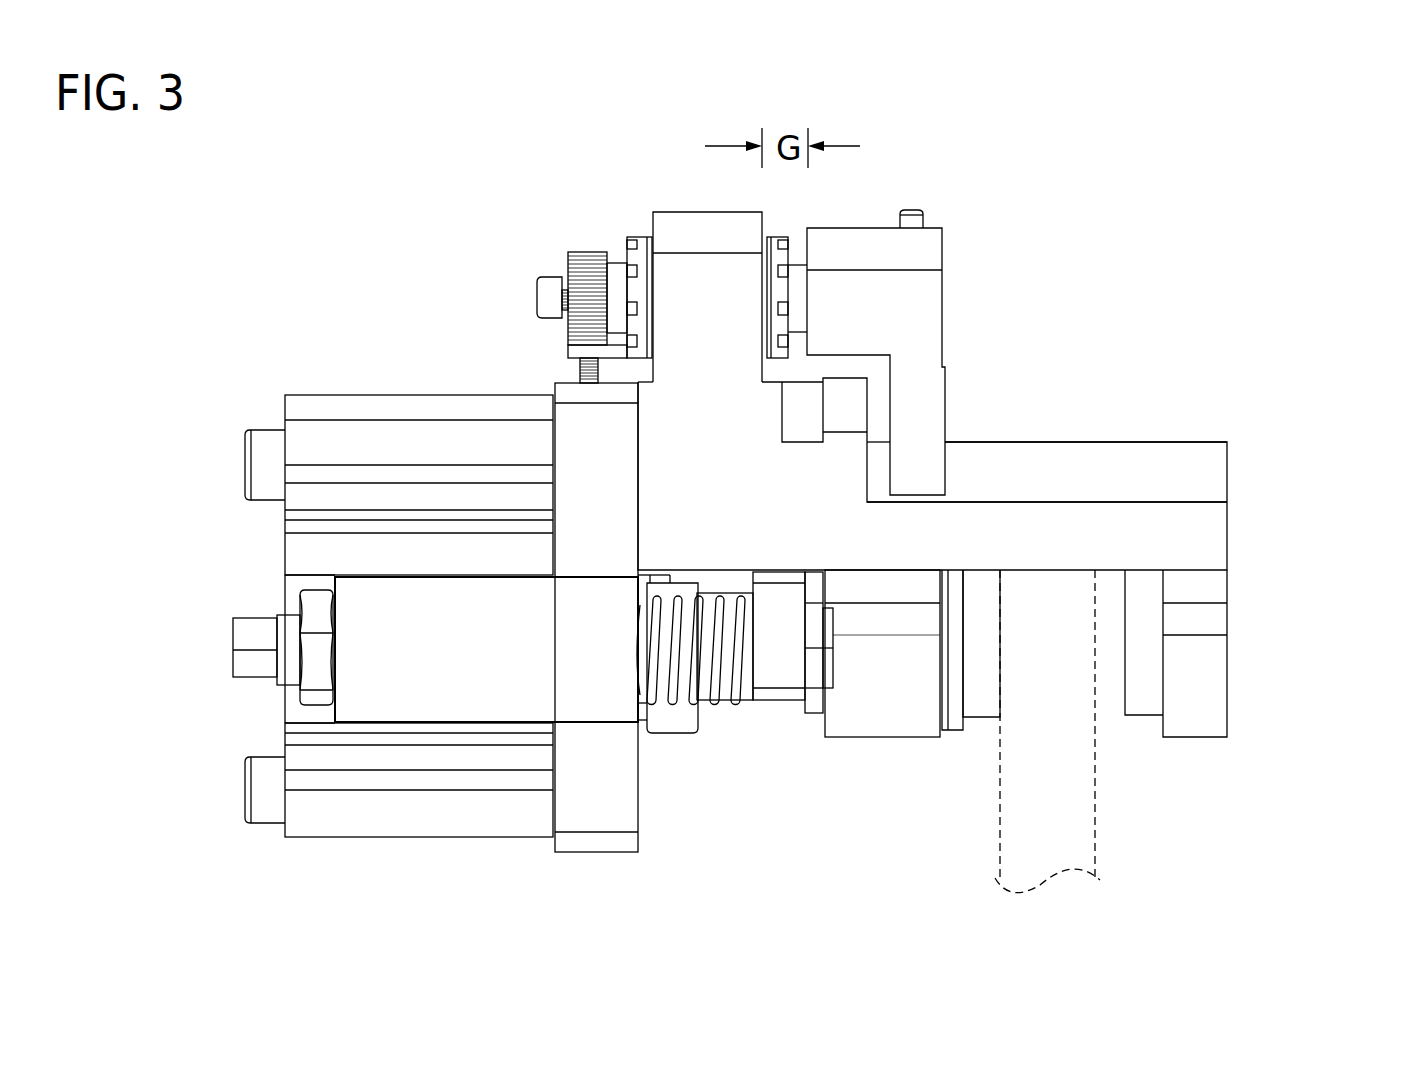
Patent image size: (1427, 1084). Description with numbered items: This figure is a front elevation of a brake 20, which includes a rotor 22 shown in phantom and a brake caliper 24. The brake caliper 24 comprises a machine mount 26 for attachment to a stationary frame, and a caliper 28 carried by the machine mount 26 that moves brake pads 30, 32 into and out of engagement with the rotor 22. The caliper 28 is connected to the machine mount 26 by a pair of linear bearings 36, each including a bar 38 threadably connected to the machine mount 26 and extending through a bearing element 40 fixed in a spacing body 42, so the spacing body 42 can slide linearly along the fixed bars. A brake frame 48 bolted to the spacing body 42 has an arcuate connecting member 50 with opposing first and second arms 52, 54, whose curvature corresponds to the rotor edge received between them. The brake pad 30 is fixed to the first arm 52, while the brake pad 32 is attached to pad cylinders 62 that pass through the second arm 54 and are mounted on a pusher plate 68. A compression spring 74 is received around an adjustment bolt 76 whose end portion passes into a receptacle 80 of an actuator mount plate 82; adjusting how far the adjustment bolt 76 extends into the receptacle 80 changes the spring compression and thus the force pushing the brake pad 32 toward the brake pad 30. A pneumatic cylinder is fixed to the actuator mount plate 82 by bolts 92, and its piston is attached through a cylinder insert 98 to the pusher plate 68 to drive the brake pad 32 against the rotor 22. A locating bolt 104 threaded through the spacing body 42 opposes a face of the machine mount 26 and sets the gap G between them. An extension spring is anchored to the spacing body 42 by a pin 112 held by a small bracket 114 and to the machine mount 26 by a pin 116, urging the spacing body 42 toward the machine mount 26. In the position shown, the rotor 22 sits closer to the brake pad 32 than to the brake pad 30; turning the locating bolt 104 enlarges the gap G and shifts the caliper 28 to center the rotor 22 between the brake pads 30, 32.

The brake 20 is at (1368, 176).
The rotor 22 is at (1108, 852).
The brake caliper 24 is at (1255, 252).
The machine mount 26 is at (945, 252).
The caliper 28 is at (300, 382).
The brake pad 30 is at (1145, 708).
The brake pad 32 is at (988, 705).
The linear bearing 36 is at (560, 240).
The bar 38 is at (805, 303).
The bearing element 40 is at (645, 240).
The spacing body 42 is at (672, 196).
The brake frame 48 is at (1248, 453).
The connecting member 50 is at (1120, 468).
The first arm 52 is at (1208, 692).
The second arm 54 is at (883, 725).
The pad cylinder 62 is at (952, 725).
The pusher plate 68 is at (773, 700).
The compression spring 74 is at (738, 708).
The adjustment bolt 76 is at (218, 627).
The receptacle 80 is at (423, 688).
The actuator mount plate 82 is at (615, 872).
The bolt 92 is at (245, 466).
The cylinder insert 98 is at (685, 725).
The locating bolt 104 is at (545, 286).
The pin 112 is at (580, 381).
The bracket 114 is at (570, 346).
The pin 116 is at (915, 210).